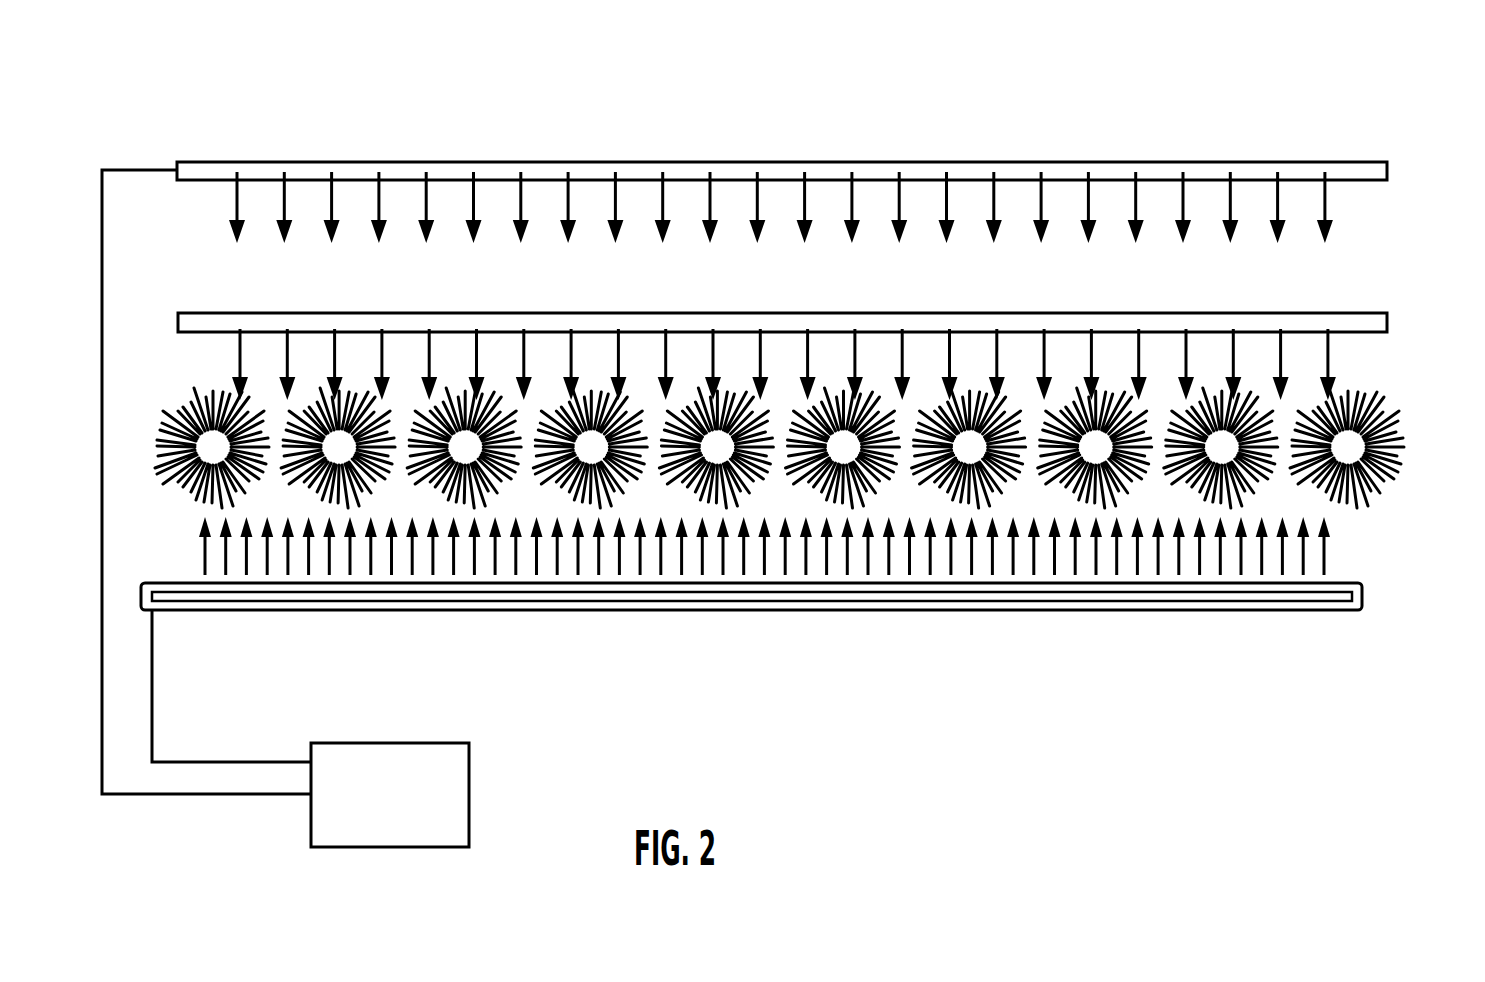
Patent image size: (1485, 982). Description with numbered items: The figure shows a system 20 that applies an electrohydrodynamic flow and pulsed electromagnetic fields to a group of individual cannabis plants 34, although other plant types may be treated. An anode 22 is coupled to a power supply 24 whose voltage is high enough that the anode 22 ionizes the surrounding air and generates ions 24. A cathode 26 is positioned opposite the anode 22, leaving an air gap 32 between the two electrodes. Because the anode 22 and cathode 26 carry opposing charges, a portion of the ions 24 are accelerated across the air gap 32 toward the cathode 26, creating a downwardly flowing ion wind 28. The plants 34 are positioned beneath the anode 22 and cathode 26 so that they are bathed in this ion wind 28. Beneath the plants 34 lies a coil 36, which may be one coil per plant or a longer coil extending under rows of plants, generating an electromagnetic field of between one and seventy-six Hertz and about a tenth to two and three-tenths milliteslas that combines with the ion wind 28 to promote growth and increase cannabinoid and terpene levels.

The system 20 is at (955, 122).
The anode 22 is at (1365, 176).
The power supply 24 is at (232, 236).
The cathode 26 is at (1375, 330).
The ion wind 28 is at (240, 358).
The air gap 32 is at (790, 294).
The plants 34 is at (1400, 468).
The coil 36 is at (1325, 560).